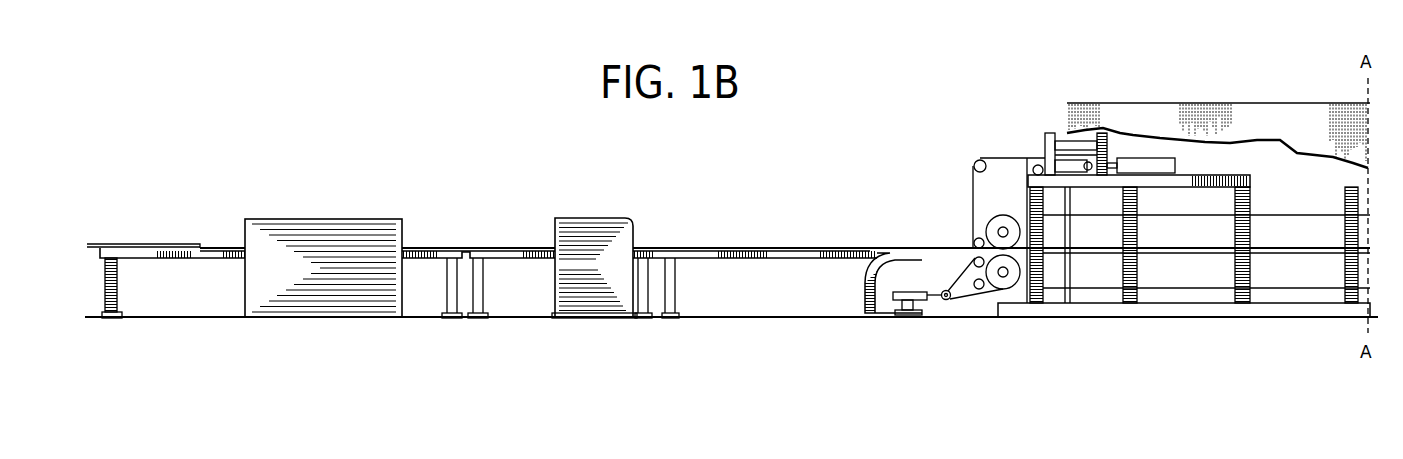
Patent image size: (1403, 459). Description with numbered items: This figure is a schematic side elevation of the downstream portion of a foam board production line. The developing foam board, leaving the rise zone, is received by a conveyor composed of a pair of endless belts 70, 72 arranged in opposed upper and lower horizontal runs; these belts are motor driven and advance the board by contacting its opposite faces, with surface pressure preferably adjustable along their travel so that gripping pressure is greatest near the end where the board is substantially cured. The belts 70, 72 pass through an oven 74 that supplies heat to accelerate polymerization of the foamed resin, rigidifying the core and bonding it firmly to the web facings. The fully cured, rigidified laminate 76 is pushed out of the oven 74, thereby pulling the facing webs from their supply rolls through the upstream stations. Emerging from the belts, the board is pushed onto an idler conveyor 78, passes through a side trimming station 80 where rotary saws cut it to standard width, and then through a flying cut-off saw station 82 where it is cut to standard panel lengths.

The endless belt 70 is at (1172, 248).
The endless belt 72 is at (1173, 255).
The oven 74 is at (1133, 115).
The rigidified laminate 76 is at (762, 247).
The idler conveyor 78 is at (777, 263).
The side trimming station 80 is at (598, 227).
The flying cut-off saw station 82 is at (360, 232).